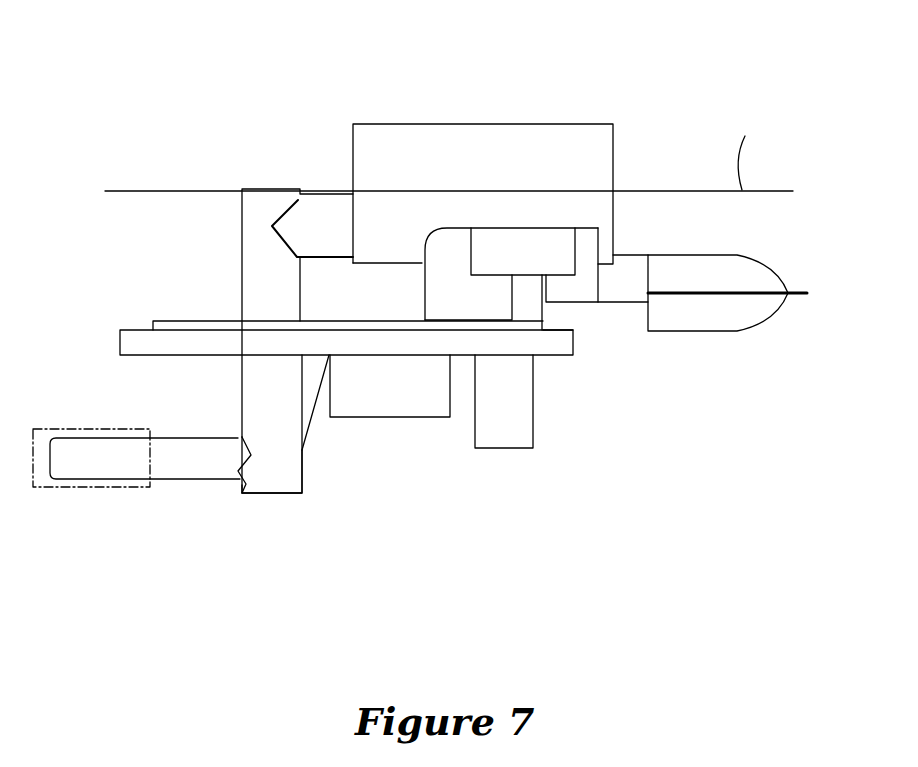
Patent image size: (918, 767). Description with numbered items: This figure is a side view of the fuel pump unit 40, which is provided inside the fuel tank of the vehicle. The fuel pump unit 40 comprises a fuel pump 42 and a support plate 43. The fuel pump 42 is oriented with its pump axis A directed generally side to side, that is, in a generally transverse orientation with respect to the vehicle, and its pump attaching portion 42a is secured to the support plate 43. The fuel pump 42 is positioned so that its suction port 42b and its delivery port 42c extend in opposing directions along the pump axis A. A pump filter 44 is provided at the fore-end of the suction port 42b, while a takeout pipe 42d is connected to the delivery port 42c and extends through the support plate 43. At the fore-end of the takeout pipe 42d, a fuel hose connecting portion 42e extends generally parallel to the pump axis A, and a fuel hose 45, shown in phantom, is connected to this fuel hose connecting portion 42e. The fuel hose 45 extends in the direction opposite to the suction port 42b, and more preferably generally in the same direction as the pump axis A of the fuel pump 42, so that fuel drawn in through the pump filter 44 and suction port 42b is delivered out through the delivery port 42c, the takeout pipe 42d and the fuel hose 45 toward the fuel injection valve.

The fuel pump unit 40 is at (200, 64).
The fuel pump 42 is at (423, 125).
The pump attaching portion 42a is at (457, 303).
The suction port 42b is at (607, 290).
The delivery port 42c is at (312, 213).
The takeout pipe 42d is at (273, 472).
The fuel hose connecting portion 42e is at (188, 472).
The support plate 43 is at (558, 350).
The pump filter 44 is at (738, 268).
The fuel hose 45 is at (45, 489).